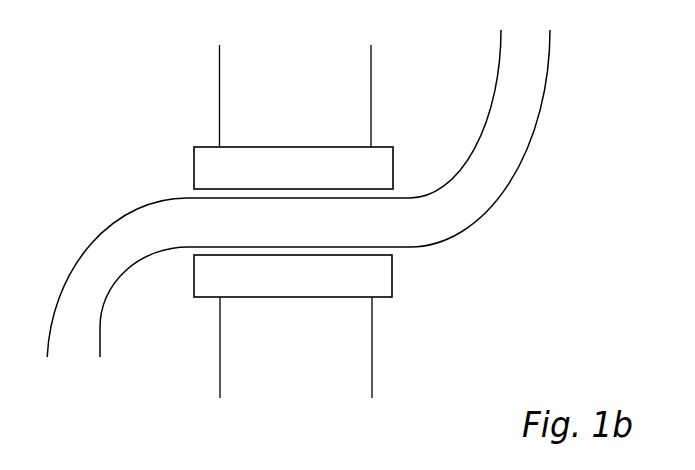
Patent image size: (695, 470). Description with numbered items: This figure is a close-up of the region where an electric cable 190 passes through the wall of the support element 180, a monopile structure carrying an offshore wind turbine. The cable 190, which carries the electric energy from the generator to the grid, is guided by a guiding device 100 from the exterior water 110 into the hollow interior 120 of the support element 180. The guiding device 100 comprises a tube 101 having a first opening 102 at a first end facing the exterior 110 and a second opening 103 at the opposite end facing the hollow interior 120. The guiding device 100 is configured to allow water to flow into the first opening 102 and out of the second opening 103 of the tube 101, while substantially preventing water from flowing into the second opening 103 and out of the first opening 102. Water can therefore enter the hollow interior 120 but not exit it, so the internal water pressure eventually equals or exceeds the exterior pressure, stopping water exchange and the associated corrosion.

The guiding device 100 is at (187, 296).
The tube 101 is at (218, 357).
The first opening 102 is at (170, 191).
The second opening 103 is at (445, 177).
The exterior water 110 is at (142, 124).
The hollow interior 120 is at (630, 123).
The support element 180 is at (149, 96).
The electric cable 190 is at (364, 193).